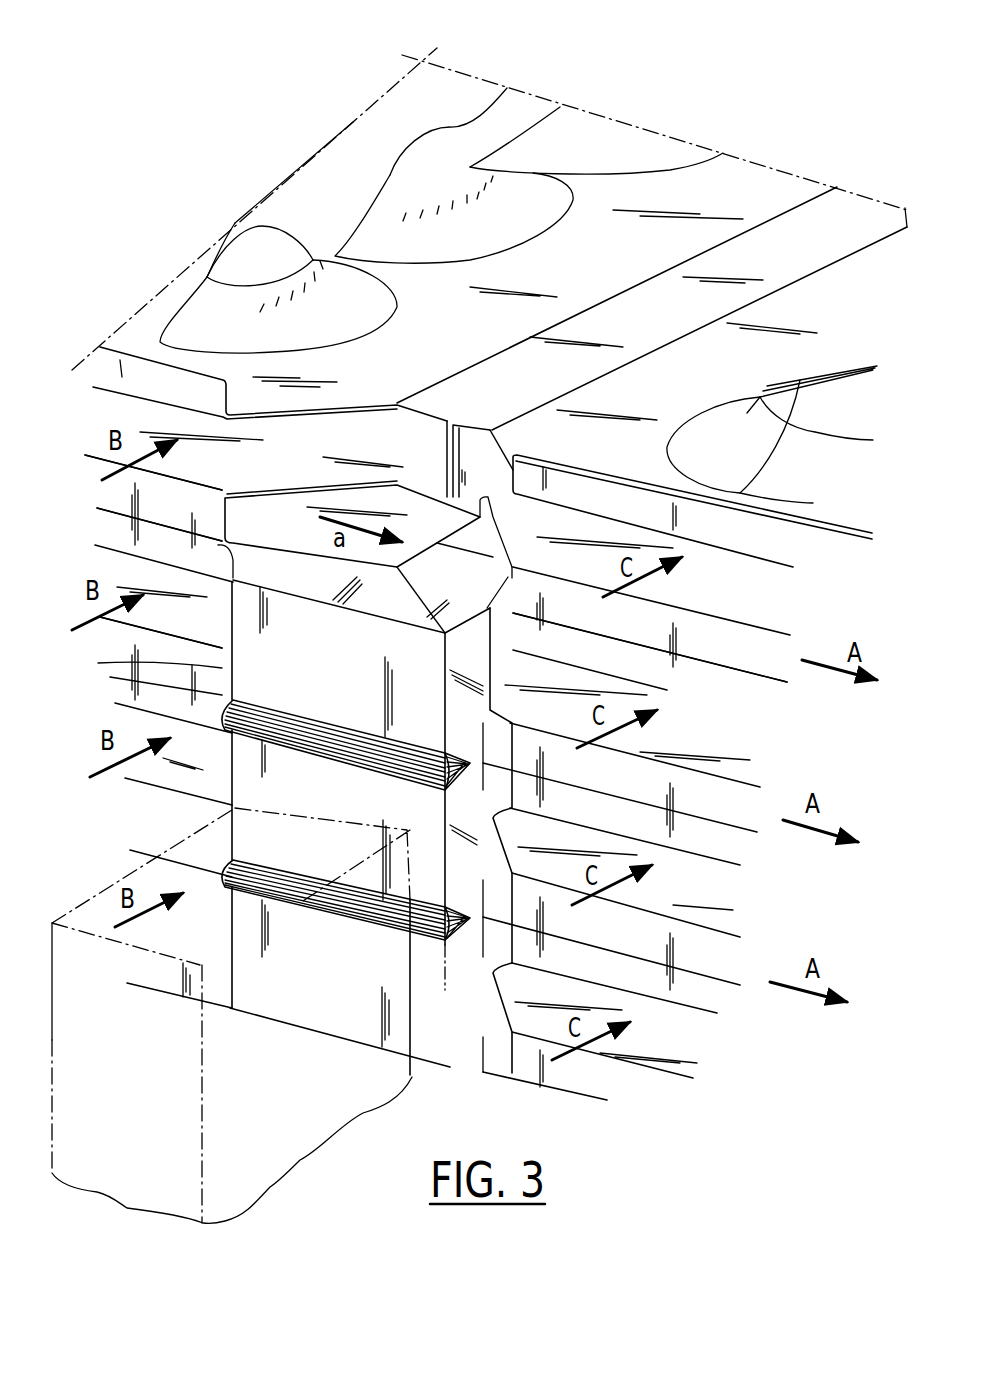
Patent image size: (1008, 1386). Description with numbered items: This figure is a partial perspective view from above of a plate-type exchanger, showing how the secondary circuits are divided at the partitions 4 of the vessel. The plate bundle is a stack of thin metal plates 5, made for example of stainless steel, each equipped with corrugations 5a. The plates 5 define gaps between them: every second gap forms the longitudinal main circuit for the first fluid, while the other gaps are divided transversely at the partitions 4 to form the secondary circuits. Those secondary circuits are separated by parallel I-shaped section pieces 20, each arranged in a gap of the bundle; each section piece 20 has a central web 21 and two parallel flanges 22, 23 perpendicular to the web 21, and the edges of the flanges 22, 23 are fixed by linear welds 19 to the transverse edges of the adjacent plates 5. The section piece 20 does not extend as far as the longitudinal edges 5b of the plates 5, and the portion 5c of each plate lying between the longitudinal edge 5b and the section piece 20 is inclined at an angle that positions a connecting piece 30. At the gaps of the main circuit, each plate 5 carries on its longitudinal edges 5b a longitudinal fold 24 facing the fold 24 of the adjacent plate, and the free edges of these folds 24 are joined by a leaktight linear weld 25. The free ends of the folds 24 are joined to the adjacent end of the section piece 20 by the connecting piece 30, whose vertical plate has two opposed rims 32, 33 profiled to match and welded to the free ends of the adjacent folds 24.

The partition 4 is at (127, 1163).
The thin metal plate 5 is at (600, 203).
The corrugation 5a is at (507, 88).
The longitudinal edge 5b is at (207, 480).
The inclined edge portion 5c is at (327, 404).
The linear weld 19 is at (613, 297).
The I-shaped section piece 20 is at (788, 250).
The central web 21 is at (467, 467).
The flange 22 is at (484, 424).
The flange 23 is at (497, 513).
The longitudinal fold 24 is at (113, 490).
The leaktight linear weld 25 is at (100, 509).
The connecting piece 30 is at (347, 651).
The rim 32 is at (233, 575).
The rim 33 is at (140, 676).